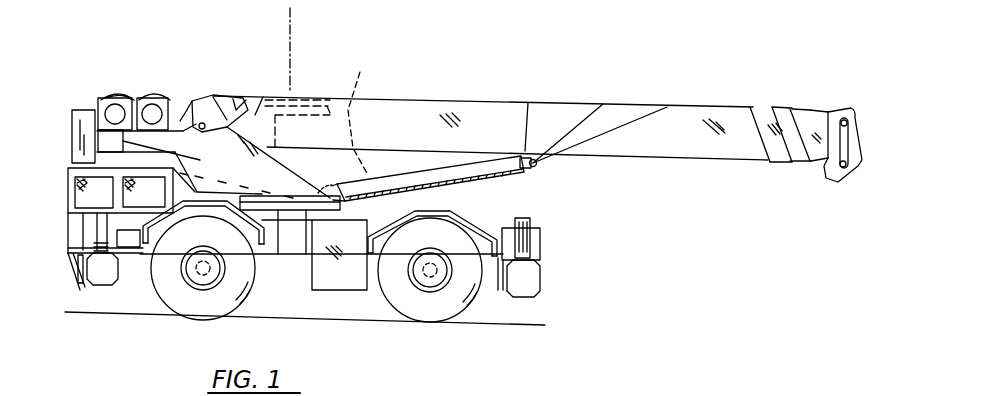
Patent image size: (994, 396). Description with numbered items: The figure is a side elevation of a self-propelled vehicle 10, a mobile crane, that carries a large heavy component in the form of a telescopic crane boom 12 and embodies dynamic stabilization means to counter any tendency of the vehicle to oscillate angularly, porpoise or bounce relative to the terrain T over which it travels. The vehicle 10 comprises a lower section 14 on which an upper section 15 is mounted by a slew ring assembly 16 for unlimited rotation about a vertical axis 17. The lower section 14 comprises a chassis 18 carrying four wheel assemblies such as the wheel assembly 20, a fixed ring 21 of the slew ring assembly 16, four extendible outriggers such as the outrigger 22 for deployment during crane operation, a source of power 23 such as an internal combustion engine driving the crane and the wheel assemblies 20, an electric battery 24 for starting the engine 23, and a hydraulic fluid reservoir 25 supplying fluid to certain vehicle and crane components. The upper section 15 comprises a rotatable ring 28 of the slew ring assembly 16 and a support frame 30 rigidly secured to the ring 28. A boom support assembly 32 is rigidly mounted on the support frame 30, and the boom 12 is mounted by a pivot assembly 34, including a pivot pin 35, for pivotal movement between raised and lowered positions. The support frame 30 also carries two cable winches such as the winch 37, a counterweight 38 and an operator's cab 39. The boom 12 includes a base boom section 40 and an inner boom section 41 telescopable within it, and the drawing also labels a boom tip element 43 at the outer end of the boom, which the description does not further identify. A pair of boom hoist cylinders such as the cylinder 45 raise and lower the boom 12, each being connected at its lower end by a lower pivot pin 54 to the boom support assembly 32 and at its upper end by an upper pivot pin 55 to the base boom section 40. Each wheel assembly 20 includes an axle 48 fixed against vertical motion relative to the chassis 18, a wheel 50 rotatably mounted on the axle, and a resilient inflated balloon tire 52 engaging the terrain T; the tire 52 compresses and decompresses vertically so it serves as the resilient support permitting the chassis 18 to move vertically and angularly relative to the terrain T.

The self-propelled vehicle 10 is at (524, 64).
The telescopic crane boom 12 is at (415, 97).
The lower section 14 is at (550, 238).
The upper section 15 is at (378, 169).
The slew ring assembly 16 is at (352, 213).
The vertical axis 17 is at (292, 26).
The chassis 18 is at (277, 258).
The wheel assembly 20 is at (490, 302).
The fixed ring 21 is at (307, 222).
The extendible outrigger 22 is at (90, 279).
The source of power 23 is at (80, 192).
The electric battery 24 is at (127, 248).
The hydraulic fluid reservoir 25 is at (349, 290).
The rotatable ring 28 is at (278, 212).
The support frame 30 is at (251, 202).
The boom support assembly 32 is at (228, 160).
The pivot assembly 34 is at (214, 108).
The pivot pin 35 is at (200, 122).
The cable winch 37 is at (136, 96).
The counterweight 38 is at (71, 128).
The operator's cab 39 is at (360, 74).
The base boom section 40 is at (690, 106).
The inner boom section 41 is at (780, 106).
The boom tip 43 is at (808, 112).
The boom hoist cylinder 45 is at (512, 172).
The axle 48 is at (201, 272).
The wheel 50 is at (436, 290).
The inflated balloon tire 52 is at (172, 296).
The lower pivot pin 54 is at (331, 179).
The upper pivot pin 55 is at (540, 166).
The terrain T is at (544, 324).